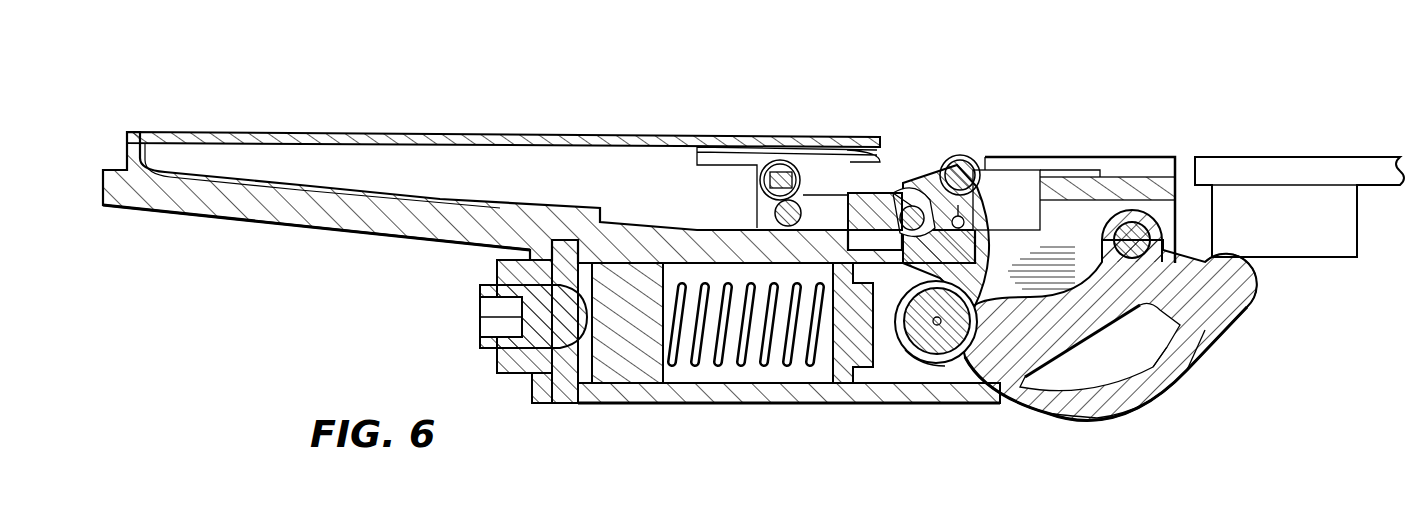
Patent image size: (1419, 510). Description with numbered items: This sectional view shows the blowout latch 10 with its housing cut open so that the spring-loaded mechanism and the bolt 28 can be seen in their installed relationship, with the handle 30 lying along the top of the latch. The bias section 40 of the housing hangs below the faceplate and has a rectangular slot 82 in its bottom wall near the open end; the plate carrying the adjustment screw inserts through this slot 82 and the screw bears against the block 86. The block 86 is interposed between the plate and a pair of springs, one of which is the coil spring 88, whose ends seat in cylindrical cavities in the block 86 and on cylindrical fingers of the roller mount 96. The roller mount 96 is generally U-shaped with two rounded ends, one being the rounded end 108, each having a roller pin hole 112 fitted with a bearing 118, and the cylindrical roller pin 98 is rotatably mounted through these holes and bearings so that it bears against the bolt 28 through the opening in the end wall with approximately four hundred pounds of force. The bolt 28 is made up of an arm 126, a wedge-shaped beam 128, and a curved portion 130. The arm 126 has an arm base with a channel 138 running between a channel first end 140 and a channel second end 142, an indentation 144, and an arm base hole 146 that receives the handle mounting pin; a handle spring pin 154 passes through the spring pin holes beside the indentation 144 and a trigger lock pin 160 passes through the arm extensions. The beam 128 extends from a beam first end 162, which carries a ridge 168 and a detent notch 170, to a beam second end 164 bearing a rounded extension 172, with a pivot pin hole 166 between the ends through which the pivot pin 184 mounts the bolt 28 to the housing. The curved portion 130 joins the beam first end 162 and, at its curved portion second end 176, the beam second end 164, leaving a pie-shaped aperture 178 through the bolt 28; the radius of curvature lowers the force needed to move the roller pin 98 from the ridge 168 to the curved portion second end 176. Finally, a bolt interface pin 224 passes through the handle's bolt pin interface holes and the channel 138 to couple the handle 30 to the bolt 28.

The blowout latch 10 is at (572, 87).
The bolt 28 is at (1208, 353).
The handle 30 is at (465, 128).
The bias section 40 is at (674, 415).
The rectangular slot 82 is at (565, 405).
The block 86 is at (624, 375).
The coil spring 88 is at (747, 368).
The roller mount 96 is at (893, 352).
The roller pin 98 is at (922, 342).
The rounded end 108 is at (926, 370).
The roller pin hole 112 is at (940, 348).
The bearing 118 is at (932, 365).
The arm 126 is at (852, 205).
The wedge-shaped beam 128 is at (1128, 380).
The curved portion 130 is at (1147, 388).
The channel 138 is at (910, 207).
The channel first end 140 is at (922, 198).
The channel second end 142 is at (903, 192).
The indentation 144 is at (960, 160).
The arm base hole 146 is at (968, 158).
The handle spring pin 154 is at (964, 218).
The trigger lock pin 160 is at (770, 192).
The beam first end 162 is at (1062, 372).
The beam second end 164 is at (1225, 300).
The pivot pin hole 166 is at (1165, 240).
The ridge 168 is at (985, 375).
The detent notch 170 is at (1050, 205).
The rounded extension 172 is at (1258, 281).
The curved portion second end 176 is at (1225, 315).
The pie-shaped aperture 178 is at (1190, 385).
The pivot pin 184 is at (1132, 222).
The bolt interface pin 224 is at (870, 150).